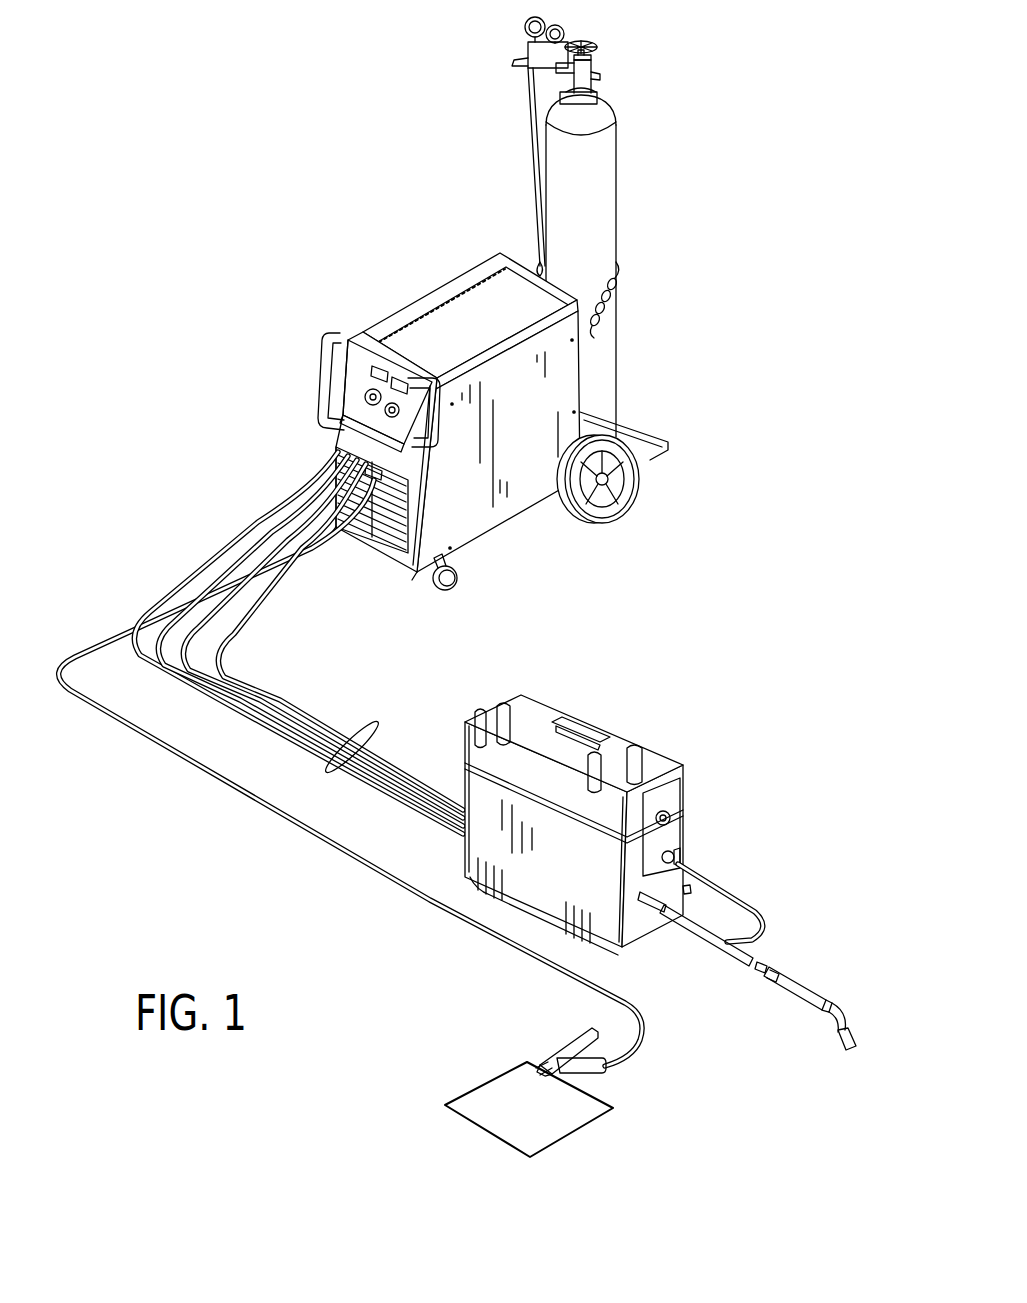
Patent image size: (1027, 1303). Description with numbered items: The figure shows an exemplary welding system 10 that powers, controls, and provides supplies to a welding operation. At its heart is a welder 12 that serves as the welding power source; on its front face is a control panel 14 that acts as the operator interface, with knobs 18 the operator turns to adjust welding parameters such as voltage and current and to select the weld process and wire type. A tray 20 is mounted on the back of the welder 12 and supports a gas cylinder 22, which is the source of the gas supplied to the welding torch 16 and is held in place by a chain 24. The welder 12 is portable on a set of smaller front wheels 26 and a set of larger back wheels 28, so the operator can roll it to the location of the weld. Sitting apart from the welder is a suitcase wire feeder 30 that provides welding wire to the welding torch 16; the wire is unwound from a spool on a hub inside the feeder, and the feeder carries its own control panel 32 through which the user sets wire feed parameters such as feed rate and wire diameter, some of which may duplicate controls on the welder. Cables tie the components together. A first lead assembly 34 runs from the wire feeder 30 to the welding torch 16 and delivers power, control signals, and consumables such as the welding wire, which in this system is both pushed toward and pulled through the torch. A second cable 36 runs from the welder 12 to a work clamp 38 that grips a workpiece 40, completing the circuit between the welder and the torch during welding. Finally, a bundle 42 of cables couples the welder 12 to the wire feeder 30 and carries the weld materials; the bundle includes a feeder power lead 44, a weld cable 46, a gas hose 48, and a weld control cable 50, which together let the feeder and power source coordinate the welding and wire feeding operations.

The welding system 10 is at (281, 248).
The welder 12 is at (487, 270).
The control panel 14 is at (365, 368).
The welding torch 16 is at (815, 991).
The knobs 18 is at (388, 410).
The tray 20 is at (650, 455).
The gas cylinder 22 is at (607, 182).
The chain 24 is at (621, 270).
The front wheels 26 is at (458, 587).
The back wheels 28 is at (607, 512).
The suitcase wire feeder 30 is at (568, 708).
The control panel 32 is at (668, 803).
The first lead assembly 34 is at (702, 931).
The second cable 36 is at (85, 641).
The work clamp 38 is at (576, 1033).
The workpiece 40 is at (550, 1117).
The bundle 42 is at (372, 736).
The feeder power lead 44 is at (147, 614).
The weld cable 46 is at (206, 594).
The gas hose 48 is at (232, 600).
The weld control cable 50 is at (262, 670).